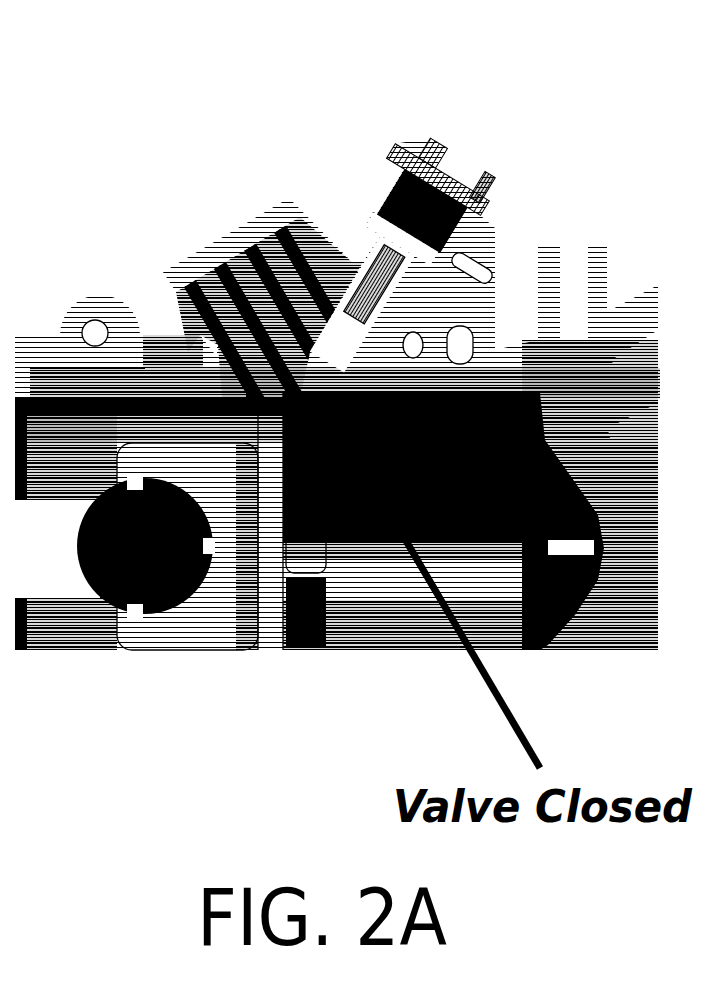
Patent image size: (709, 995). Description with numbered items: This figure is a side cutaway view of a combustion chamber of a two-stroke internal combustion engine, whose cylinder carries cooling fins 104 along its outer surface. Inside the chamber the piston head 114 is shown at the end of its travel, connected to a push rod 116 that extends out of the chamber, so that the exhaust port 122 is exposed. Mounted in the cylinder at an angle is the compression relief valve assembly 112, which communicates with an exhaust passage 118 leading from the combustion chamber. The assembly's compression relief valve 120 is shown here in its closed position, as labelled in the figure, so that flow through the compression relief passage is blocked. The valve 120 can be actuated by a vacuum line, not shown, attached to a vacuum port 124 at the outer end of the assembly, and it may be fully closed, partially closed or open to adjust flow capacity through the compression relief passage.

The cooling fins 104 is at (600, 244).
The compression relief valve assembly 112 is at (448, 158).
The piston head 114 is at (265, 695).
The push rod 116 is at (123, 718).
The exhaust passage 118 is at (236, 250).
The compression relief valve 120 is at (336, 337).
The exhaust port 122 is at (292, 398).
The vacuum port 124 is at (480, 178).